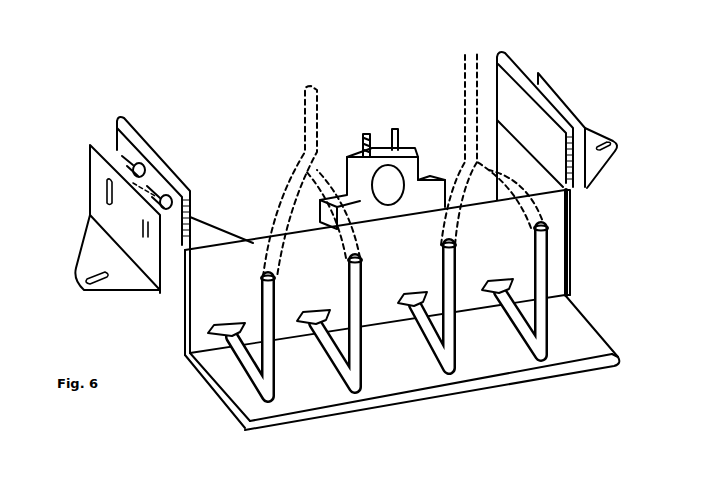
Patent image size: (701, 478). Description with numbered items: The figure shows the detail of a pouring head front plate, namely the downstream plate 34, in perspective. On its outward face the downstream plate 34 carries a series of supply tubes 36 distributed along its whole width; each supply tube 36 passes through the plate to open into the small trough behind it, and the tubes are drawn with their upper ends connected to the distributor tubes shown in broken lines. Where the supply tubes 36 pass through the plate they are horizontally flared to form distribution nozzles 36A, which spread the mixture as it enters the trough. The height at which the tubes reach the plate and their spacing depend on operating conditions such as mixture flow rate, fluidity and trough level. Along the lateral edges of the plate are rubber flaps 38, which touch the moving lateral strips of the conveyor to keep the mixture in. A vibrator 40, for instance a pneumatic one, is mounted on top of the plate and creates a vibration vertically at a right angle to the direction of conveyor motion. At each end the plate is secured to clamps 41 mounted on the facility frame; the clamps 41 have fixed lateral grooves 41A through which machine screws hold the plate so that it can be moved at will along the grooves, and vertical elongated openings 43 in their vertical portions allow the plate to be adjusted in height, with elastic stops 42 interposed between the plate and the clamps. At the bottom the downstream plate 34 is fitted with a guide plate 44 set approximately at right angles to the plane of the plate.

The downstream plate 34 is at (359, 327).
The supply tubes 36 is at (531, 305).
The distribution nozzles 36A is at (406, 298).
The lateral rubber flaps 38 is at (183, 309).
The vibrator 40 is at (390, 182).
The clamps 41 is at (597, 132).
The lateral grooves 41A is at (80, 290).
The elastic stops 42 is at (116, 162).
The vertical elongated openings 43 is at (105, 190).
The guide plate 44 is at (297, 397).